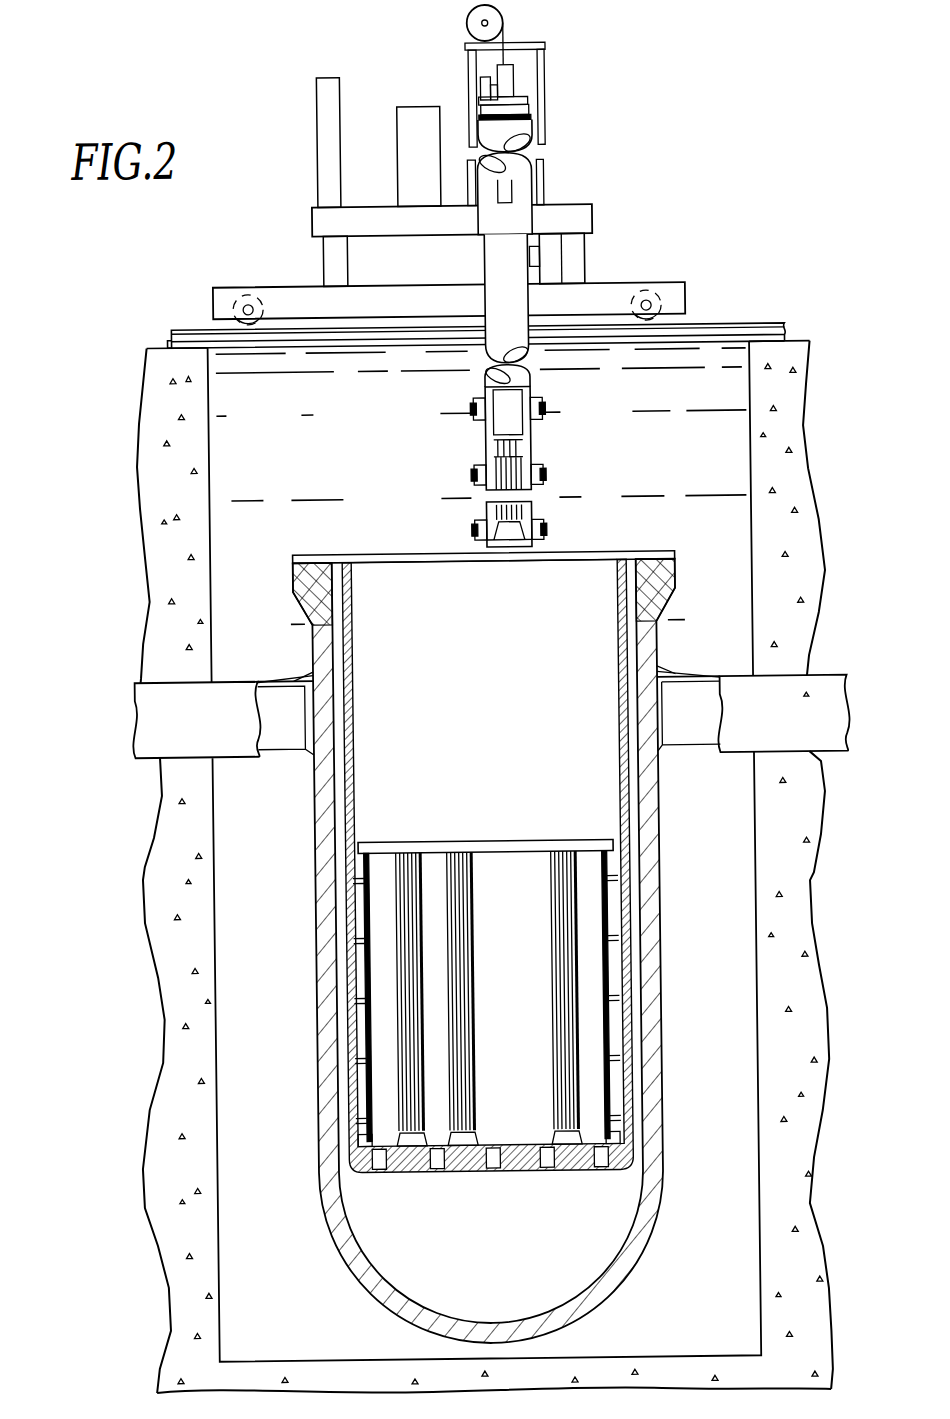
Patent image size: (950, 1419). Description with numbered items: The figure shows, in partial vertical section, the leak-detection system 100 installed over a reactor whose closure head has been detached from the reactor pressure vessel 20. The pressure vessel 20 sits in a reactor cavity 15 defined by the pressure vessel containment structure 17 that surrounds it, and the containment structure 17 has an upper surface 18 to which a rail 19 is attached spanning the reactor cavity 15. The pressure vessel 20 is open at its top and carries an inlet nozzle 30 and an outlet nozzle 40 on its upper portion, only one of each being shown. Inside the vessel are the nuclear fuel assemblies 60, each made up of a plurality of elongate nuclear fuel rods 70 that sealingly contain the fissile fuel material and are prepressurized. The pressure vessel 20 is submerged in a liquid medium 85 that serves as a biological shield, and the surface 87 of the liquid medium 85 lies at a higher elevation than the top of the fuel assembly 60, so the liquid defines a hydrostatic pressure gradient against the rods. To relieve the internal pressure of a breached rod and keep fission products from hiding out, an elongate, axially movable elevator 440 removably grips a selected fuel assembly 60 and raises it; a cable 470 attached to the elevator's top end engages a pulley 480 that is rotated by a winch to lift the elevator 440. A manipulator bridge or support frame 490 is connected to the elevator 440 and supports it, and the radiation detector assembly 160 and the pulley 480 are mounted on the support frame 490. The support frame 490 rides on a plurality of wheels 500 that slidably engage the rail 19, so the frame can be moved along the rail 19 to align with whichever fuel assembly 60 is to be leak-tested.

The leak-detection system 100 is at (707, 112).
The reactor cavity 15 is at (751, 481).
The pressure vessel containment structure 17 is at (821, 532).
The upper surface 18 is at (148, 340).
The rail 19 is at (193, 323).
The reactor pressure vessel 20 is at (669, 606).
The inlet nozzle 30 is at (298, 760).
The outlet nozzle 40 is at (816, 697).
The nuclear fuel assembly 60 is at (460, 867).
The nuclear fuel rod 70 is at (563, 869).
The liquid medium 85 is at (334, 362).
The surface 87 is at (694, 367).
The radiation detector assembly 160 is at (299, 157).
The elevator 440 is at (525, 173).
The cable 470 is at (516, 56).
The pulley 480 is at (469, 18).
The support frame 490 is at (705, 223).
The wheels 500 is at (247, 281).